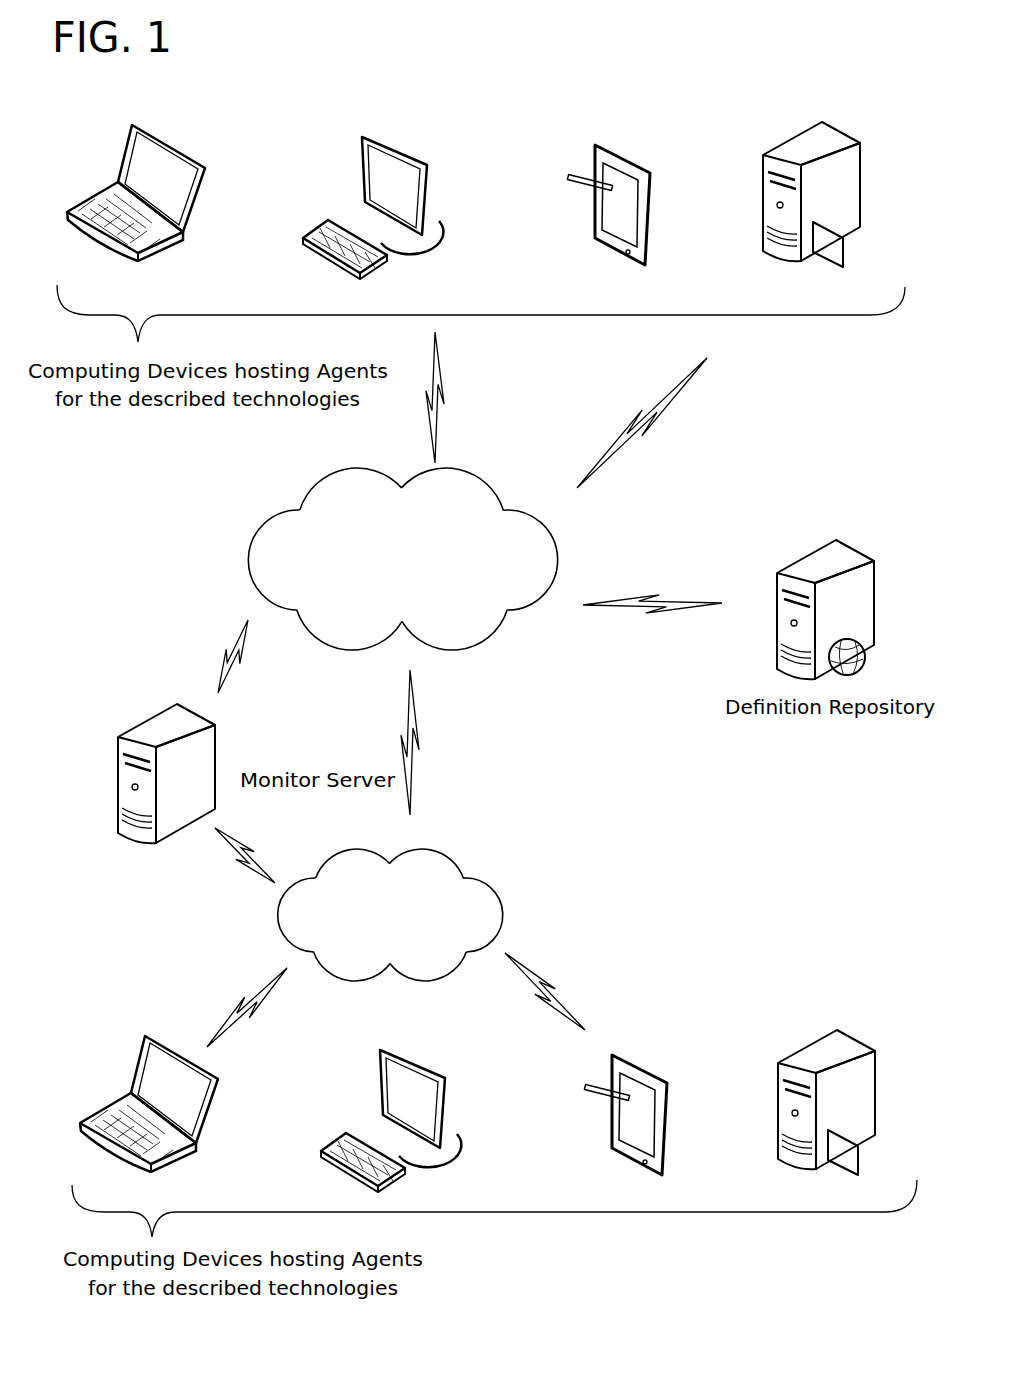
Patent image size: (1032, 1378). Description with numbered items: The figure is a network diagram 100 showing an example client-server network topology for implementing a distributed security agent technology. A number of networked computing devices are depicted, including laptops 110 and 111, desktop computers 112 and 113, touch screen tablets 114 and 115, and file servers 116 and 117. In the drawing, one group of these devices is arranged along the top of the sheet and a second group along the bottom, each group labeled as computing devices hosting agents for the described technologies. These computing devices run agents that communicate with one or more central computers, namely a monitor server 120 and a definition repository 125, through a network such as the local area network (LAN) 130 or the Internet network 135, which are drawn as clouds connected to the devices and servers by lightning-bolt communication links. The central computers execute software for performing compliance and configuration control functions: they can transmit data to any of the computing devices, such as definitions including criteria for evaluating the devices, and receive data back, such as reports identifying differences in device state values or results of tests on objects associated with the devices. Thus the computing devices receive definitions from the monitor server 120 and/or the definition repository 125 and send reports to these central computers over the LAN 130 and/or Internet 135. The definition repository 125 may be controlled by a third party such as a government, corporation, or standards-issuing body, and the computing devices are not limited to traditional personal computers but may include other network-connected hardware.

The network diagram 100 is at (298, 100).
The laptop 110 is at (118, 156).
The laptop 111 is at (130, 1082).
The desktop computer 112 is at (362, 153).
The desktop computer 113 is at (380, 1080).
The touch screen tablet 114 is at (595, 153).
The touch screen tablet 115 is at (590, 1085).
The file server 116 is at (765, 154).
The file server 117 is at (780, 1078).
The monitor server 120 is at (120, 742).
The definition repository 125 is at (778, 574).
The local area network (LAN) 130 is at (434, 926).
The Internet network 135 is at (464, 569).